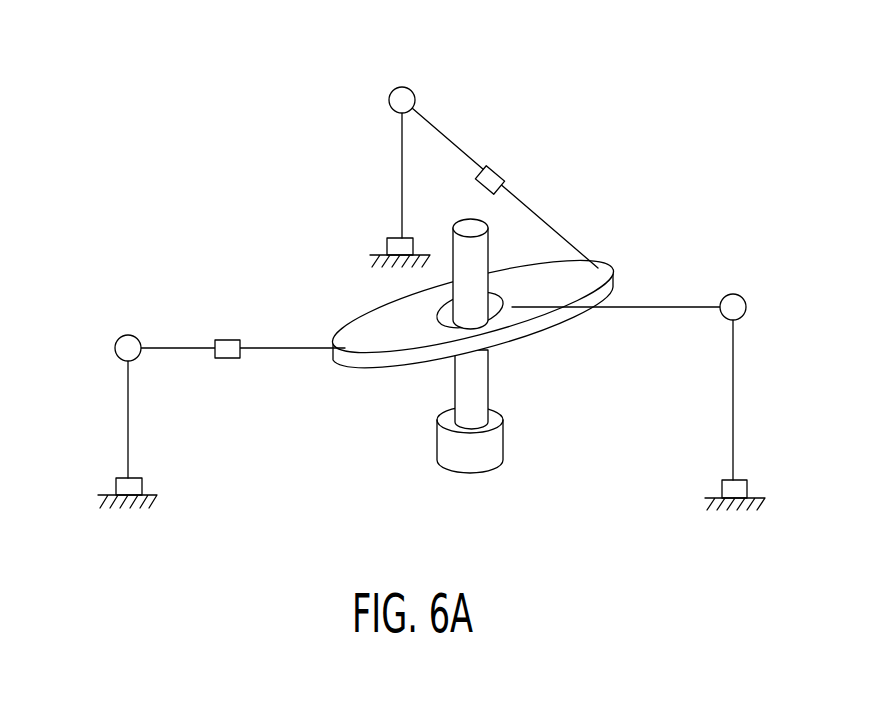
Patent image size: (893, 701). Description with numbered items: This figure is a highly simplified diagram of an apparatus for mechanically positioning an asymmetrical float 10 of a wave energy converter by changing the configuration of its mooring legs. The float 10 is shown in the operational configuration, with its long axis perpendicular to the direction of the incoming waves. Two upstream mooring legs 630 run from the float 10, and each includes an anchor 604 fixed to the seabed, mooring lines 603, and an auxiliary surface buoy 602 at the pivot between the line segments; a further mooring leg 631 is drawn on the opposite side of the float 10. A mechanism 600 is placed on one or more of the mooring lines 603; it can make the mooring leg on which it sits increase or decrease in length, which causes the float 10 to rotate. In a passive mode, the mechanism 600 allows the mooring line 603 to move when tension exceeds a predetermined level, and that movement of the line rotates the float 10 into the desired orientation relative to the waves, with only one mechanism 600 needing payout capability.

The float 10 is at (373, 323).
The mechanism 600 is at (228, 340).
The auxiliary surface buoy 602 is at (400, 87).
The mooring line 603 is at (402, 185).
The anchor 604 is at (143, 483).
The upstream mooring leg 630 is at (314, 91).
The linkage assembly 631 is at (766, 256).